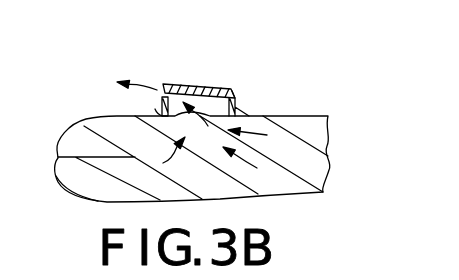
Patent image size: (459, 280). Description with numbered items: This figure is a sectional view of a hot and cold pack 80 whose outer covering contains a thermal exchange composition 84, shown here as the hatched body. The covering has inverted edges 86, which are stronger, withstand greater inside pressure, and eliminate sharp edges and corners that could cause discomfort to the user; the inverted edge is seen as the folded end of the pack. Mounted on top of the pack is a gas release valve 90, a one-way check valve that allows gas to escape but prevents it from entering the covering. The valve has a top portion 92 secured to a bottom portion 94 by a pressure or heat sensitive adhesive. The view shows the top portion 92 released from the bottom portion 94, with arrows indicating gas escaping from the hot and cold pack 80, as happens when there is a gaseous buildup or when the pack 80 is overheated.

The hot and cold pack 80 is at (358, 101).
The thermal exchange composition 84 is at (323, 185).
The inverted edges 86 is at (78, 155).
The gas release valve 90 is at (271, 80).
The top portion 92 is at (200, 87).
The bottom portion 94 is at (162, 97).